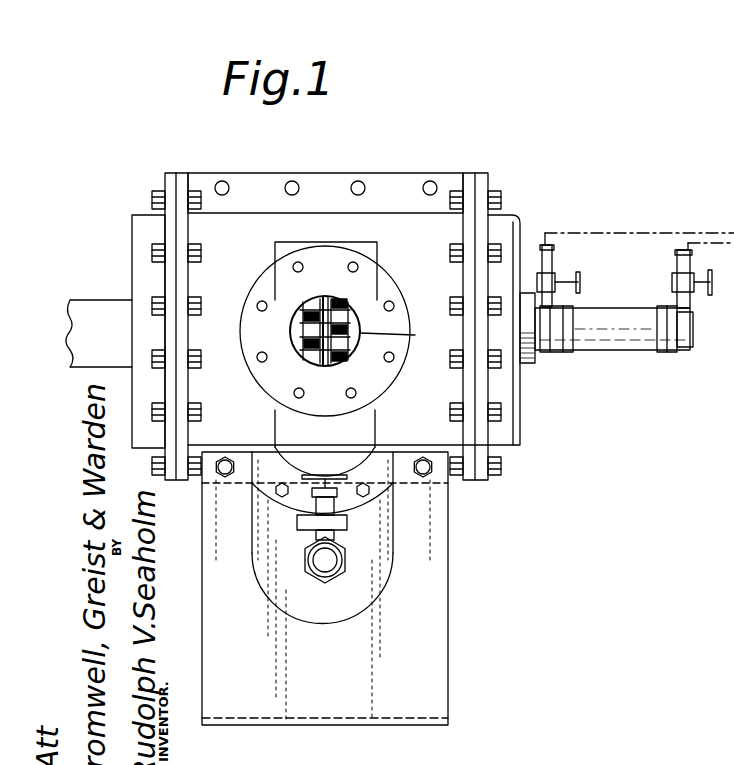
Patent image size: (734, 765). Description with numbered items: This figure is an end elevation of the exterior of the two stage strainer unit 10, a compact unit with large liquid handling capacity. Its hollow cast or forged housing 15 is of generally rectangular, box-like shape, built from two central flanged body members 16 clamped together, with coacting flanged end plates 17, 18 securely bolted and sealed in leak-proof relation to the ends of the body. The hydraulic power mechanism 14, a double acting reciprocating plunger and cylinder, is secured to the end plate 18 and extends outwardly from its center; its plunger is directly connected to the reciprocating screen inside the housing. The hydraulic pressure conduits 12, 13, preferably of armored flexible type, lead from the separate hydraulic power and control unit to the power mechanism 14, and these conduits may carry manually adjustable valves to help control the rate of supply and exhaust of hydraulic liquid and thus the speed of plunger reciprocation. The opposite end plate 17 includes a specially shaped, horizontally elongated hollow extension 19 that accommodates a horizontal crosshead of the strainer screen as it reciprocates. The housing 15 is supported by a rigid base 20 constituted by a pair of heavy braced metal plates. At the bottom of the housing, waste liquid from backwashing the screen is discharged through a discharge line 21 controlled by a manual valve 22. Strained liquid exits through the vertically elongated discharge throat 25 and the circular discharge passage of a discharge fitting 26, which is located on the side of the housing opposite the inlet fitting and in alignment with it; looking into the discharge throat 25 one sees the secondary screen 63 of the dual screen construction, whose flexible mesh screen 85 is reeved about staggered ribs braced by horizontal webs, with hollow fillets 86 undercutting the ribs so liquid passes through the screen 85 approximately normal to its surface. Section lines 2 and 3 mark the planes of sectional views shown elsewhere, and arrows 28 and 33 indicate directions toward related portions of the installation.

The section line 2- 2 is at (47, 360).
The section line 3- 3 is at (298, 143).
The strainer unit 10 is at (518, 188).
The hydraulic pressure conduit 12 is at (555, 302).
The hydraulic pressure conduit 13 is at (672, 300).
The hydraulic power mechanism 14 is at (619, 344).
The housing 15 is at (526, 222).
The central flanged body member 16 is at (383, 228).
The flanged end plate 17 is at (140, 434).
The flanged end plate 18 is at (517, 432).
The hollow extension 19 is at (96, 358).
The base 20 is at (445, 579).
The discharge line 21 is at (303, 553).
The manual valve 22 is at (318, 505).
The discharge throat 25 is at (331, 300).
The discharge fitting 26 is at (378, 293).
The arrow 28 is at (732, 531).
The arrow 33 is at (733, 397).
The secondary screen 63 is at (342, 357).
The flexible mesh screen 85 is at (335, 333).
The hollow fillet 86 is at (290, 336).